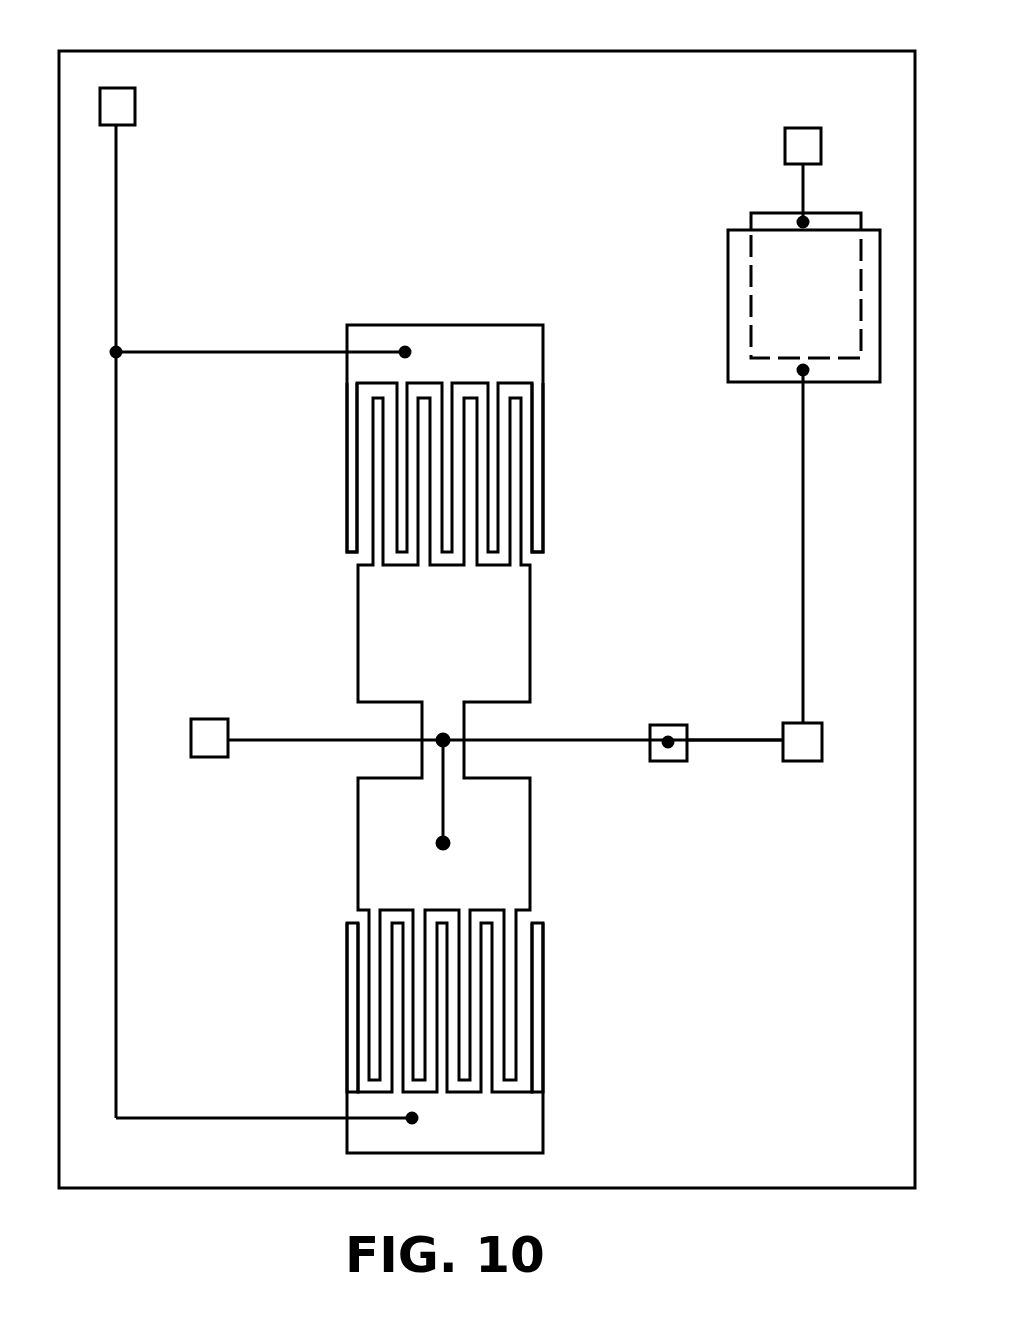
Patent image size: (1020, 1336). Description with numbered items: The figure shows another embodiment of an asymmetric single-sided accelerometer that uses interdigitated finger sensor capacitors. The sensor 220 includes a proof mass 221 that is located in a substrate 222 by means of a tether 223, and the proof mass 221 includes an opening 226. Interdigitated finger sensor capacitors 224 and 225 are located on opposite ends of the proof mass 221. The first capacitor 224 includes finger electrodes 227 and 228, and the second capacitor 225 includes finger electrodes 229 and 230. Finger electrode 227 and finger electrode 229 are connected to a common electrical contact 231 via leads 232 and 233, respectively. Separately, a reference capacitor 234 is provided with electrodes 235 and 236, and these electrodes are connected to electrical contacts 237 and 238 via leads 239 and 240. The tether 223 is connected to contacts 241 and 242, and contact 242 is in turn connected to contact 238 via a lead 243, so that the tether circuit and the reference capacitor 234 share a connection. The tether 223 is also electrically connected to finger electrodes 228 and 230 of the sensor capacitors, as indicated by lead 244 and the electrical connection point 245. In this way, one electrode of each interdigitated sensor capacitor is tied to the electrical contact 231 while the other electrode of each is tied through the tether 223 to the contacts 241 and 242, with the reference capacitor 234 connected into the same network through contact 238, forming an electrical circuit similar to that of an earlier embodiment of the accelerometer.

The sensor 220 is at (512, 43).
The proof mass 221 is at (626, 878).
The substrate 222 is at (760, 514).
The tether 223 is at (545, 740).
The interdigitated finger sensor capacitor 224 is at (411, 454).
The interdigitated finger sensor capacitor 225 is at (398, 1038).
The opening 226 is at (476, 672).
The finger electrode 227 is at (352, 526).
The finger electrode 228 is at (512, 457).
The finger electrode 229 is at (356, 985).
The finger electrode 230 is at (510, 1038).
The electrical contact 231 is at (135, 108).
The lead 232 is at (170, 352).
The lead 233 is at (116, 680).
The reference capacitor 234 is at (766, 304).
The electrode 235 is at (775, 213).
The electrode 236 is at (770, 382).
The electrical contact 237 is at (805, 128).
The electrical contact 238 is at (805, 761).
The lead 239 is at (806, 200).
The lead 240 is at (804, 626).
The contact 241 is at (207, 757).
The contact 242 is at (668, 761).
The lead 243 is at (718, 740).
The lead 244 is at (443, 843).
The electrical connection point 245 is at (440, 738).